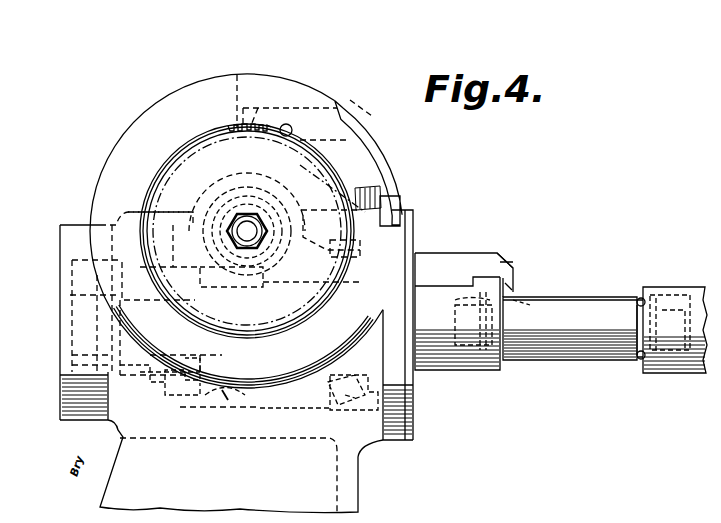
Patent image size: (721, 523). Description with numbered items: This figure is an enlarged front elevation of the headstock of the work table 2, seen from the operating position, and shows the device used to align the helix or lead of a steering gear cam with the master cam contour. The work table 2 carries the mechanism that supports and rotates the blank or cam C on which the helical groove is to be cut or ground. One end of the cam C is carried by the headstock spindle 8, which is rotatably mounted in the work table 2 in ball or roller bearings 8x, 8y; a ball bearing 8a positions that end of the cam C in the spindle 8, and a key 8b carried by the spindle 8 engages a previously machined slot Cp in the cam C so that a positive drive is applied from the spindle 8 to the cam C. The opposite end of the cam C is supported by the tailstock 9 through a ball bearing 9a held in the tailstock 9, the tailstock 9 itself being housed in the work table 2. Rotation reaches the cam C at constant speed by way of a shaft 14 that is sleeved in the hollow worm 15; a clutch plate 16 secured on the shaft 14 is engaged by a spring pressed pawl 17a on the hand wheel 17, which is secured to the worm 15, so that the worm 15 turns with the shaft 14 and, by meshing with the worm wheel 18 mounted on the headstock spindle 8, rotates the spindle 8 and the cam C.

The work table 2 is at (358, 483).
The hand wheel 17 is at (173, 99).
The spring pressed pawl 17a is at (307, 103).
The clutch plate 16 is at (228, 129).
The shaft 14 is at (244, 220).
The hollow worm 15 is at (273, 196).
The headstock spindle 8 is at (282, 283).
The ball bearing 8a is at (514, 274).
The key 8b is at (518, 291).
The slot Cp is at (516, 300).
The blank or cam C is at (580, 368).
The ball bearing 9a is at (655, 285).
The tailstock 9 is at (681, 372).
The ball or roller bearing 8x is at (168, 372).
The worm wheel 18 is at (225, 397).
The ball or roller bearing 8y is at (347, 402).